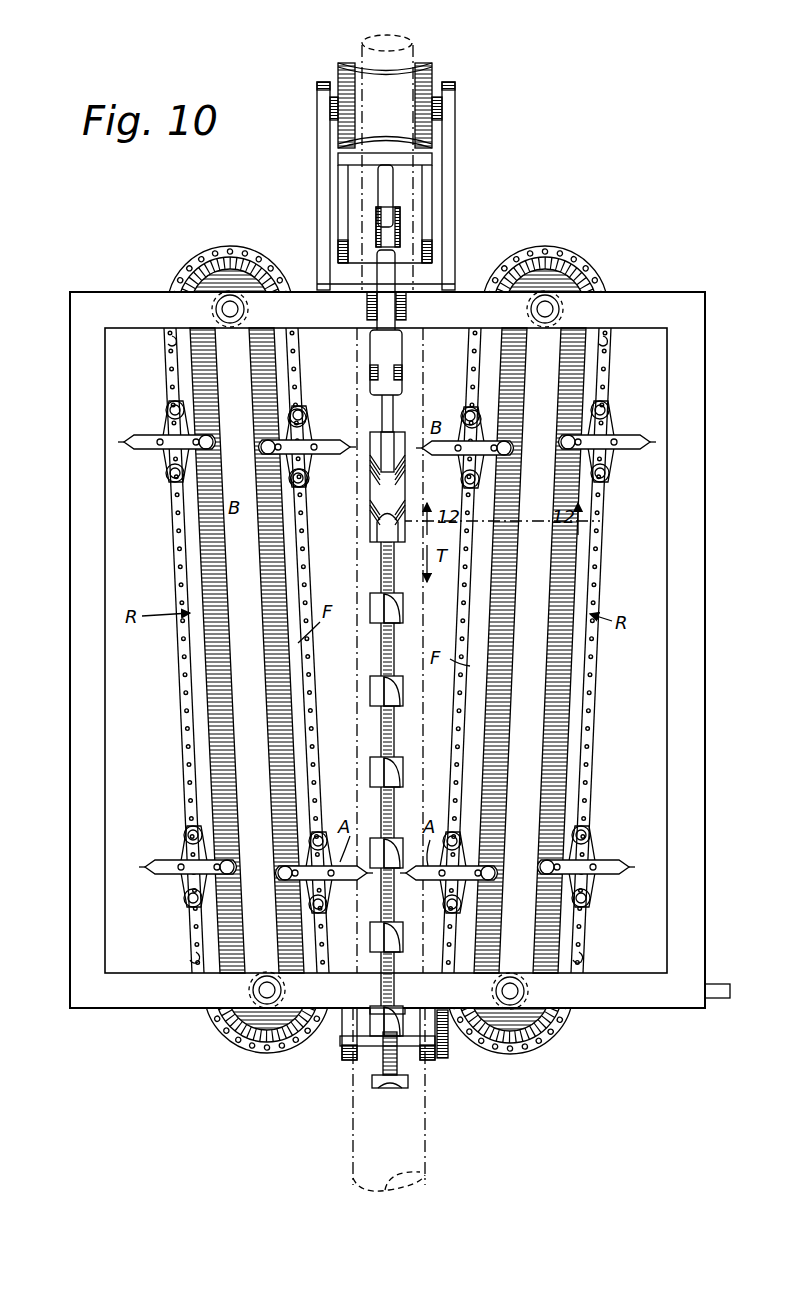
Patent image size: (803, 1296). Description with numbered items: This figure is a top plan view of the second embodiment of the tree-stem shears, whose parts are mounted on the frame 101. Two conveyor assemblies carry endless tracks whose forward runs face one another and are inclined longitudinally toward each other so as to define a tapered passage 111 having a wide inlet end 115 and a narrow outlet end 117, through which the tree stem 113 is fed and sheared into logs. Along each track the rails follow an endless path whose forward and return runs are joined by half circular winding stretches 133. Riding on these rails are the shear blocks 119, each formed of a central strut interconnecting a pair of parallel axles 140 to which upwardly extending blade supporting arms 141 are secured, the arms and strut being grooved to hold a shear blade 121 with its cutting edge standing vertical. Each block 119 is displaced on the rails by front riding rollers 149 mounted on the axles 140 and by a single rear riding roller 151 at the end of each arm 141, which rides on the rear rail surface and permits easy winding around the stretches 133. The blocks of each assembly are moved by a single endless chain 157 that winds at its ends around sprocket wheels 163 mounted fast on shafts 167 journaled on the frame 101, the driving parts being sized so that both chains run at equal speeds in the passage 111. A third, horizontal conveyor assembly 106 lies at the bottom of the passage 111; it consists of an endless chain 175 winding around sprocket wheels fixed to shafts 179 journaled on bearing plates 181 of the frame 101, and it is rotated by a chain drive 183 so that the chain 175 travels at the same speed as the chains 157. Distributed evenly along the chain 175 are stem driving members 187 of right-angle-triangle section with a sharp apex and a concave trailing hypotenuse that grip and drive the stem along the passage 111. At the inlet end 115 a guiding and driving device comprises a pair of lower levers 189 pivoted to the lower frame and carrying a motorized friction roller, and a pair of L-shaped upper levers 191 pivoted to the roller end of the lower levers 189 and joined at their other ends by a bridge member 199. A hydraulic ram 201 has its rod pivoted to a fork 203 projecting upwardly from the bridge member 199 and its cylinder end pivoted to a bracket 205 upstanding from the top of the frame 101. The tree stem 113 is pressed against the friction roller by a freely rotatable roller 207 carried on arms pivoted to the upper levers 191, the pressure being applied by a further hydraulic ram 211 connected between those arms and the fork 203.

The frame 101 is at (680, 268).
The conveyor assembly 106 is at (367, 510).
The passage 111 is at (458, 363).
The tree stem 113 is at (403, 1170).
The inlet end 115 is at (296, 292).
The outlet end 117 is at (417, 1018).
The shear block 119 is at (163, 873).
The shear blade 121 is at (126, 442).
The half circular winding stretch 133 is at (246, 258).
The axle 140 is at (172, 466).
The blade supporting arm 141 is at (138, 442).
The front riding roller 149 is at (302, 418).
The rear riding roller 151 is at (260, 456).
The endless chain 157 is at (178, 523).
The sprocket wheel 163 is at (172, 340).
The shaft 167 is at (222, 310).
The endless chain 175 is at (398, 1075).
The shaft 179 is at (372, 1046).
The bearing plate 181 is at (347, 1060).
The chain drive 183 is at (455, 1045).
The stem driving member 187 is at (403, 618).
The lower lever 189 is at (332, 110).
The upper lever 191 is at (318, 145).
The bridge member 199 is at (393, 273).
The hydraulic ram 201 is at (383, 276).
The fork 203 is at (399, 233).
The bracket 205 is at (404, 306).
The freely rotatable roller 207 is at (418, 72).
The hydraulic ram 211 is at (395, 196).